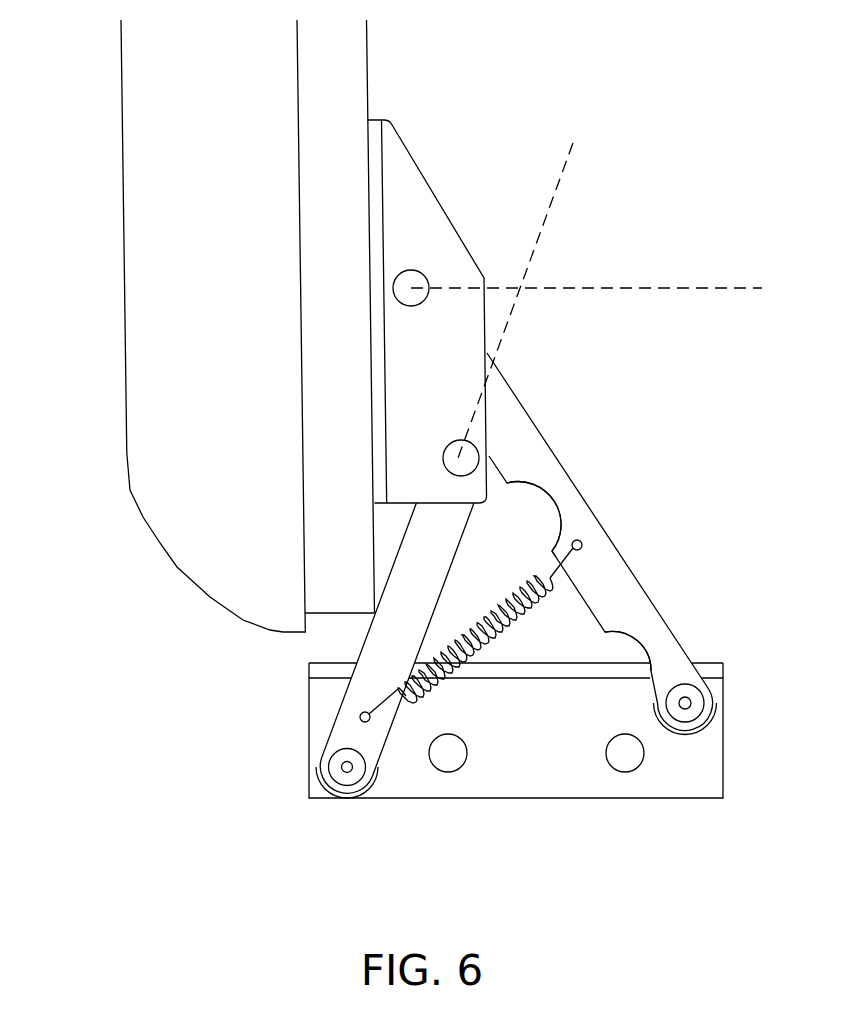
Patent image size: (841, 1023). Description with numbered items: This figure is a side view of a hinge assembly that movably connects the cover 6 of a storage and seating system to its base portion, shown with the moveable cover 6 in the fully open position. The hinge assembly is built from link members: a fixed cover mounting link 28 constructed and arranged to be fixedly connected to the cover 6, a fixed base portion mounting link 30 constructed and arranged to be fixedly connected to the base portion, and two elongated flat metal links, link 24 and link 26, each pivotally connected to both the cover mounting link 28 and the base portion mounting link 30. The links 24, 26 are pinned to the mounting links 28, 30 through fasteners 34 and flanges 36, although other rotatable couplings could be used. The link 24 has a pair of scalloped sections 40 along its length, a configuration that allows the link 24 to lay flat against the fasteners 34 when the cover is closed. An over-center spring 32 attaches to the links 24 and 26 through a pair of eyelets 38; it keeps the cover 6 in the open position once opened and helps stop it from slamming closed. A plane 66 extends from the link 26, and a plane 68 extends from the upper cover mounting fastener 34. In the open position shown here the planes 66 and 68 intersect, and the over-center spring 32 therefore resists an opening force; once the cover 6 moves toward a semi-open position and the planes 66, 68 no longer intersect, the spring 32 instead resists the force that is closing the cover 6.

The cover 6 is at (187, 237).
The link 24 is at (538, 462).
The link 26 is at (376, 632).
The fixed cover mounting link 28 is at (410, 188).
The fixed base portion mounting link 30 is at (690, 745).
The over-center spring 32 is at (560, 606).
The fasteners 34 is at (411, 278).
The flanges 36 is at (337, 768).
The eyelets 38 is at (355, 718).
The scalloped sections 40 is at (553, 515).
The plane 66 is at (565, 172).
The plane 68 is at (716, 288).